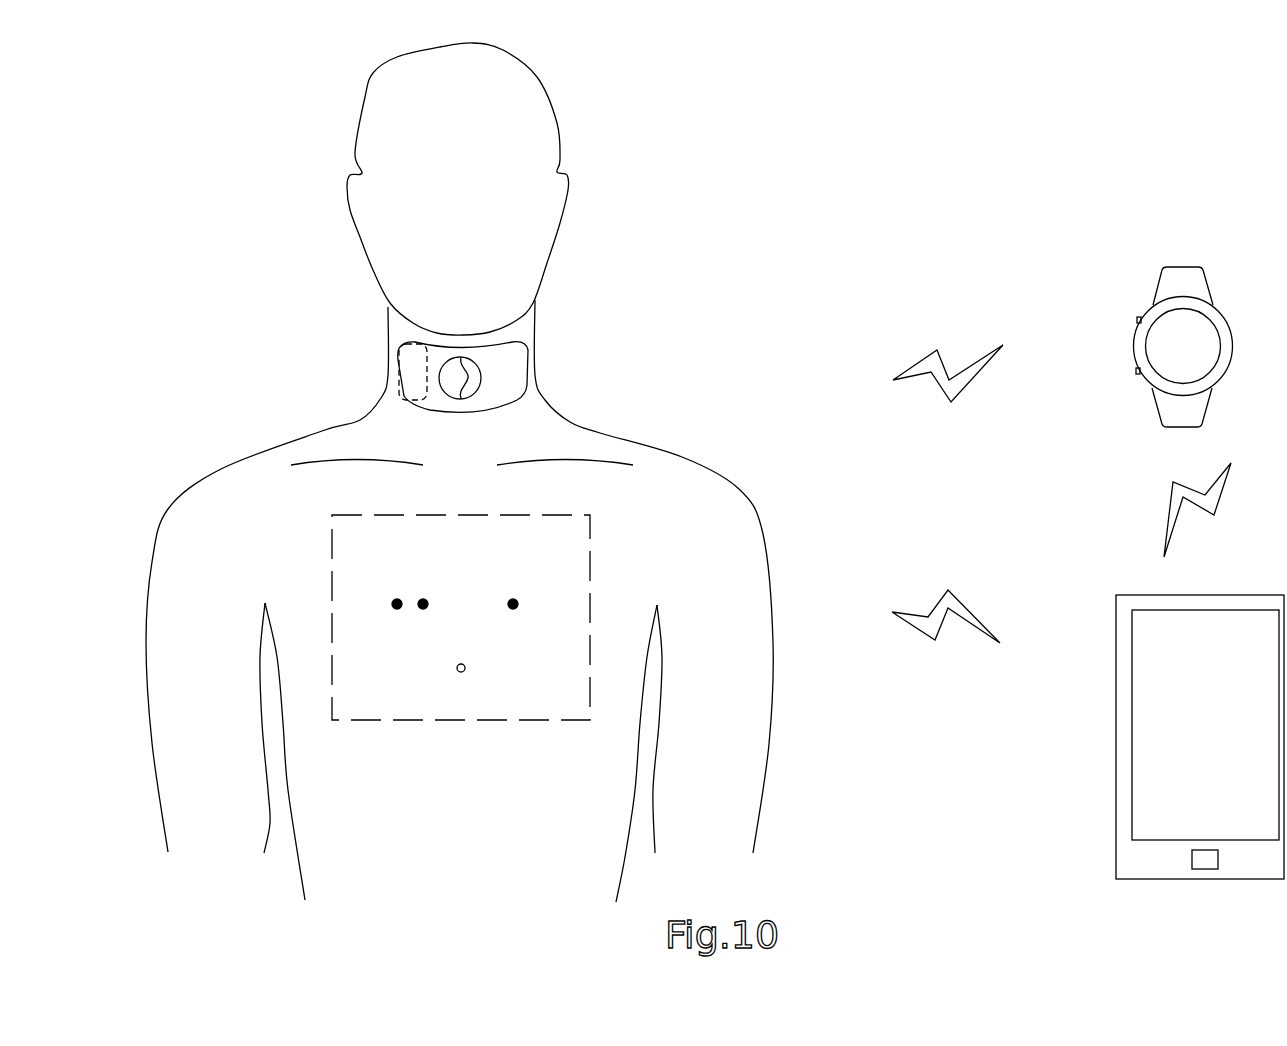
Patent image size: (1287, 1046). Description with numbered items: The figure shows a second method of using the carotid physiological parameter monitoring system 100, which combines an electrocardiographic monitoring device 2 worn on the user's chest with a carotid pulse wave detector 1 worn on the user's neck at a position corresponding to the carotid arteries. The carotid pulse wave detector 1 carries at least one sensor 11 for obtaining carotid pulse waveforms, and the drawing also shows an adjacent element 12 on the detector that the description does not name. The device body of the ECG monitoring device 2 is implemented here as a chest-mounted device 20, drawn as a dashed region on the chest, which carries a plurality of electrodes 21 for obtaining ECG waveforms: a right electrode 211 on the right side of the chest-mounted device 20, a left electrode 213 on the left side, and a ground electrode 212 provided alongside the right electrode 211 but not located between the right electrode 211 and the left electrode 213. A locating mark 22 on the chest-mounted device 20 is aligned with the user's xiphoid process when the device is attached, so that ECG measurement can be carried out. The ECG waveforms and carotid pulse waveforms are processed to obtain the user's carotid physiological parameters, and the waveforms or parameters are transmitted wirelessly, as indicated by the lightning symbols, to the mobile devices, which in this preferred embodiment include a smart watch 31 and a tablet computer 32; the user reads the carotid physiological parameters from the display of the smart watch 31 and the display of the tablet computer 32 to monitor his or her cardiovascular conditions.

The carotid physiological parameter monitoring system 100 is at (1204, 125).
The carotid pulse wave detector 1 is at (465, 343).
The sensor 11 is at (403, 377).
The main control module of wearable device 12 is at (481, 378).
The electrocardiographic (ECG) monitoring device 2 is at (610, 607).
The chest-mounted device 20 is at (573, 574).
The electrodes 21 is at (640, 700).
The right electrode 211 is at (423, 605).
The ground electrode 212 is at (397, 605).
The left electrode 213 is at (513, 605).
The locating mark 22 is at (463, 672).
The smart watch 31 is at (1135, 328).
The tablet computer 32 is at (1116, 778).